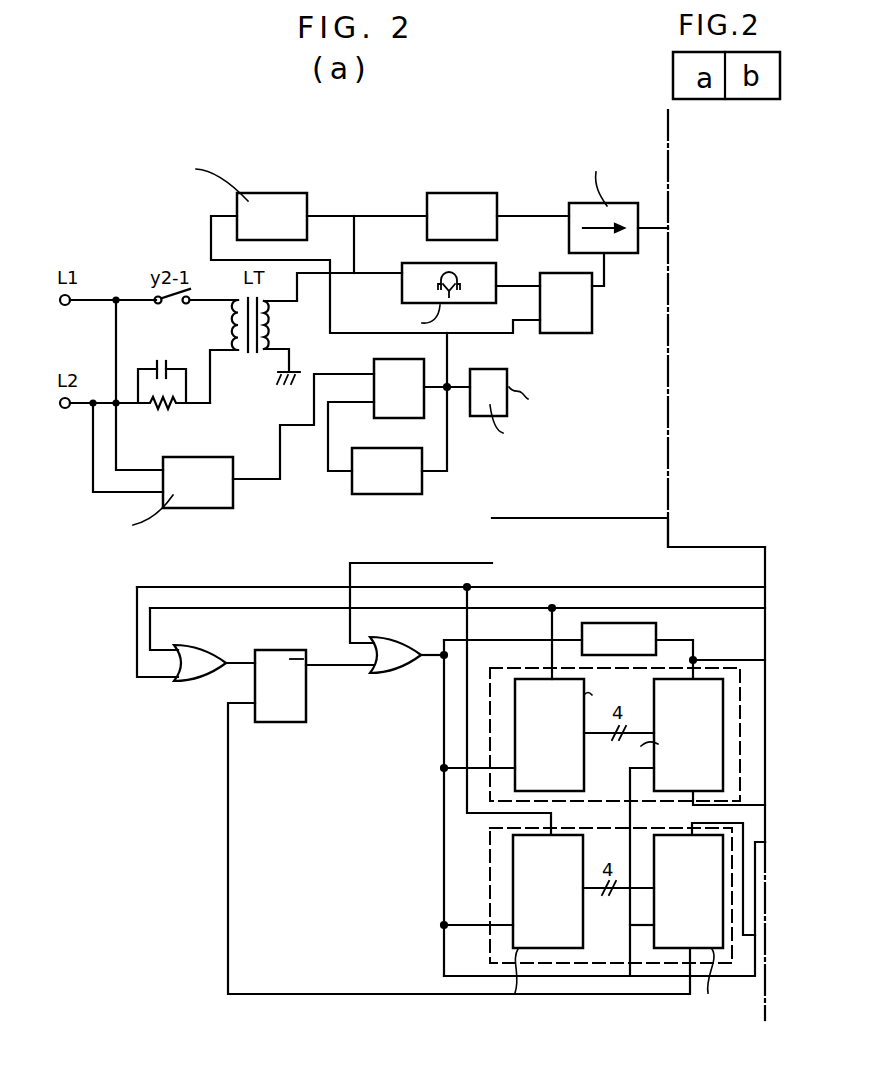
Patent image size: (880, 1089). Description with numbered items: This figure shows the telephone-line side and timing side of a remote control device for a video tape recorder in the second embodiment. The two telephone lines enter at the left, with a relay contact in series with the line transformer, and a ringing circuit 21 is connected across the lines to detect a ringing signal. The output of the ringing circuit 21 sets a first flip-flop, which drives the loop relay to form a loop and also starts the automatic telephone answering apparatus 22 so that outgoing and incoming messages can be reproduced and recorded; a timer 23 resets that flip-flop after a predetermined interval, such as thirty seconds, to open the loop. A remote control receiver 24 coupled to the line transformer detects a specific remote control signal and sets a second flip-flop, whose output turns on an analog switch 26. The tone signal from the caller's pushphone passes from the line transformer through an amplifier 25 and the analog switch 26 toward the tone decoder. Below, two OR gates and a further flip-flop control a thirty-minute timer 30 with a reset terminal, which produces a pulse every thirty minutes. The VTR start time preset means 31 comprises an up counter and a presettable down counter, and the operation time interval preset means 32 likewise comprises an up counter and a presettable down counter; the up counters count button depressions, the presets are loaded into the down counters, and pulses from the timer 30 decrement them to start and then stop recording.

The ringing circuit 21 is at (205, 457).
The automatic telephone answering apparatus 22 is at (308, 207).
The timer 23 is at (372, 437).
The remote control receiver 24 is at (497, 277).
The amplifier 25 is at (498, 207).
The analog switch 26 is at (614, 256).
The 30-minute timer 30 is at (659, 630).
The VTR start time preset means 31 is at (490, 740).
The operation time interval preset means 32 is at (490, 862).